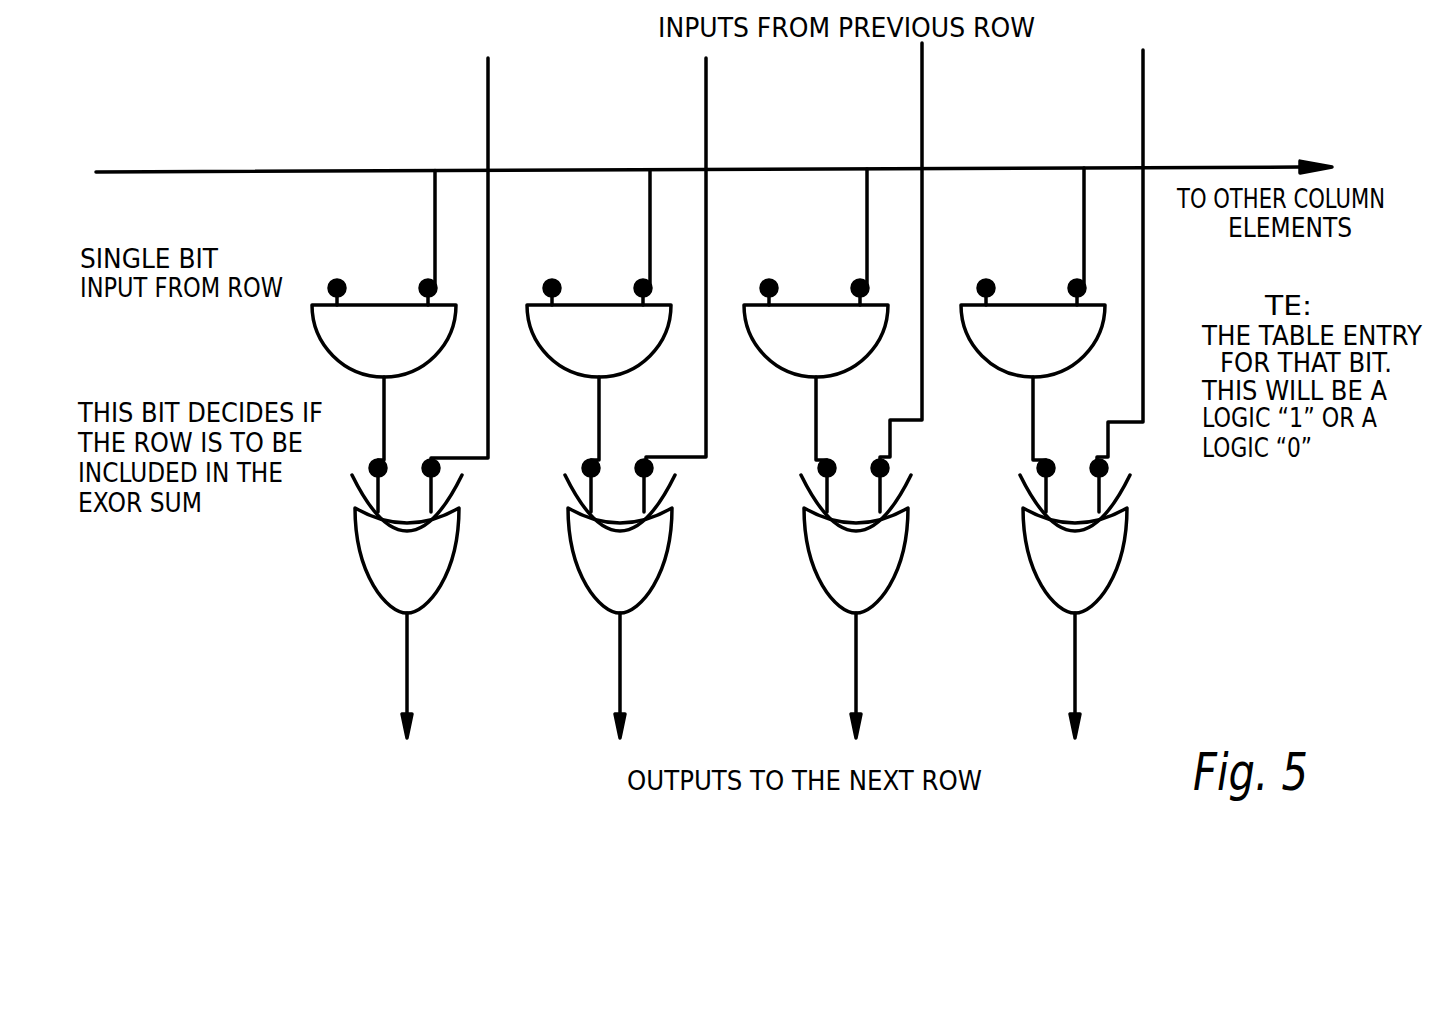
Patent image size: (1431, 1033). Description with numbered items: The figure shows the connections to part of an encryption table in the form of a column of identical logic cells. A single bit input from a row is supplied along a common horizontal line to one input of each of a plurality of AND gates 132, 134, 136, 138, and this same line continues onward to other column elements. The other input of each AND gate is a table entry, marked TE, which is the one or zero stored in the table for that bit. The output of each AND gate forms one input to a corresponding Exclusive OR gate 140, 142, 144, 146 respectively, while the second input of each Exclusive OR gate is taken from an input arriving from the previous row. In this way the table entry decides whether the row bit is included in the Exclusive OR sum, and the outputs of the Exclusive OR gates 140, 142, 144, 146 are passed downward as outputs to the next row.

The AND gate 132 is at (358, 353).
The AND gate 134 is at (573, 353).
The AND gate 136 is at (790, 353).
The AND gate 138 is at (1007, 353).
The Exclusive OR gate 140 is at (382, 583).
The Exclusive OR gate 142 is at (595, 583).
The Exclusive OR gate 144 is at (831, 583).
The Exclusive OR gate 146 is at (1050, 583).